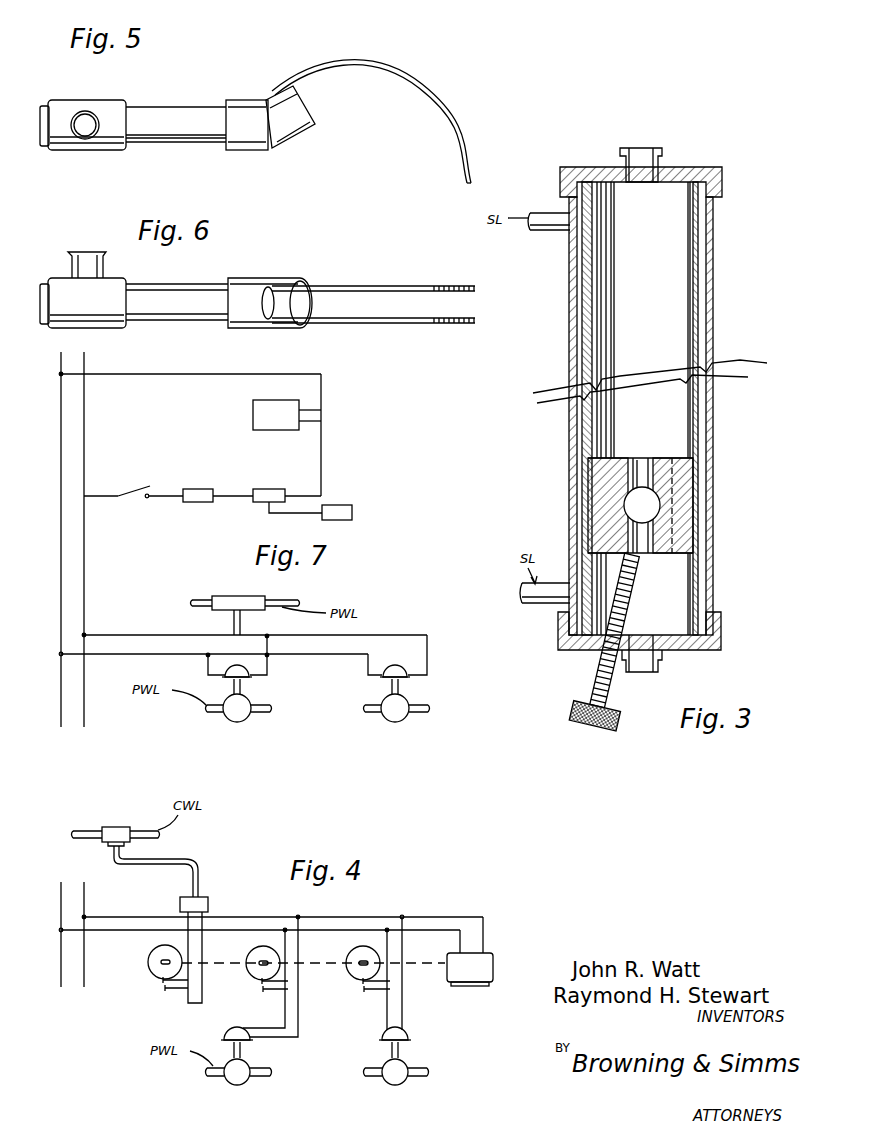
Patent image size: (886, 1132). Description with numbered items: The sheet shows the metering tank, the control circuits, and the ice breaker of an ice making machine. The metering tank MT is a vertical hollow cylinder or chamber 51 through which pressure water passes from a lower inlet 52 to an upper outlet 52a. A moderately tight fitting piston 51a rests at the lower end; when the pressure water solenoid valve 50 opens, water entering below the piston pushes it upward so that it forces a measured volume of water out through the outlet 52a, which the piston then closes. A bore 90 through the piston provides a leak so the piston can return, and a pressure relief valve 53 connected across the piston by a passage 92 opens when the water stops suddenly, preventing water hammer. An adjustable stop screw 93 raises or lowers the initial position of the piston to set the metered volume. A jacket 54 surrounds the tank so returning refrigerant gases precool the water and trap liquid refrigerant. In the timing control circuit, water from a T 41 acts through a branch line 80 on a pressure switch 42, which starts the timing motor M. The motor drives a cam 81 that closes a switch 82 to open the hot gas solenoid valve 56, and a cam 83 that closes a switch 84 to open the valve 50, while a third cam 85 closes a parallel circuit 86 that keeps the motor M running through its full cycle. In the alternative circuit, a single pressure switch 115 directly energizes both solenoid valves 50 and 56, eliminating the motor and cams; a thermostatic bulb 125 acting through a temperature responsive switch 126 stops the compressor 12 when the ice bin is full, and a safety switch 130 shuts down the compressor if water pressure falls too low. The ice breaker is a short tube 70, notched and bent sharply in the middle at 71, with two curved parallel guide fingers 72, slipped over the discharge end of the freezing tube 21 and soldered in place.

In FIG. 7, the compressor 12 is at (253, 411).
In FIG. 5, the freezing tube 21 is at (190, 107).
In FIG. 6, the freezing tube 21 is at (180, 322).
In FIG. 4, the T 41 is at (120, 827).
In FIG. 4, the pressure switch 42 is at (209, 904).
In FIG. 7, the pressure water solenoid valve 50 is at (227, 718).
In FIG. 4, the pressure water solenoid valve 50 is at (227, 1083).
In FIG. 3, the cylinder or chamber 51 is at (699, 234).
In FIG. 3, the piston 51a is at (610, 458).
In FIG. 3, the inlet 52 is at (647, 665).
In FIG. 3, the outlet 52a is at (650, 150).
In FIG. 3, the pressure relief valve 53 is at (656, 500).
In FIG. 3, the jacket 54 is at (714, 310).
In FIG. 7, the hot gas solenoid valve 56 is at (405, 720).
In FIG. 4, the hot gas solenoid valve 56 is at (407, 1067).
In FIG. 5, the tube 70 is at (297, 136).
In FIG. 6, the tube 70 is at (260, 278).
In FIG. 5, the bend 71 is at (263, 98).
In FIG. 5, the guide members or fingers 72 is at (436, 90).
In FIG. 6, the guide members or fingers 72 is at (407, 286).
In FIG. 4, the line 80 is at (187, 862).
In FIG. 4, the cam 81 is at (348, 957).
In FIG. 4, the switch 82 is at (370, 993).
In FIG. 4, the cam 83 is at (247, 957).
In FIG. 4, the switch 84 is at (263, 993).
In FIG. 4, the cam 85 is at (149, 955).
In FIG. 4, the circuit 86 is at (186, 1000).
In FIG. 3, the bore 90 is at (672, 458).
In FIG. 3, the passage 92 is at (648, 537).
In FIG. 3, the screw 93 is at (596, 687).
In FIG. 7, the pressure switch 115 is at (232, 597).
In FIG. 7, the thermostatic bulb 125 is at (352, 513).
In FIG. 7, the temperature responsive switch 126 is at (272, 489).
In FIG. 7, the safety switch 130 is at (199, 489).
In FIG. 4, the timing motor M is at (493, 960).
In FIG. 3, the metering tank MT is at (720, 278).